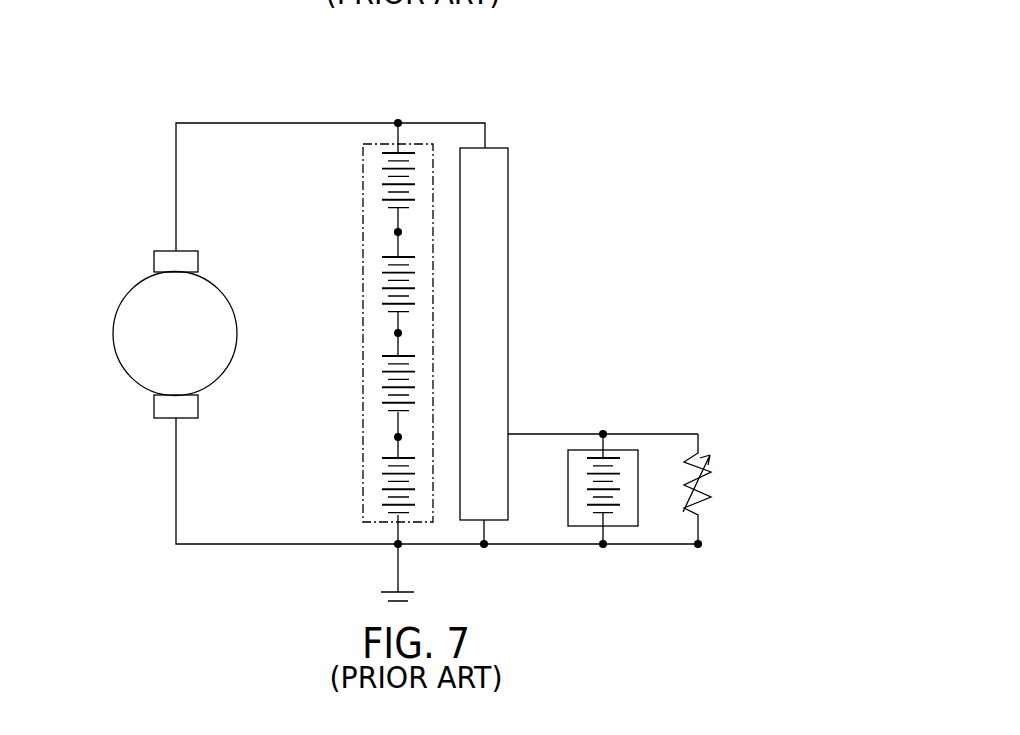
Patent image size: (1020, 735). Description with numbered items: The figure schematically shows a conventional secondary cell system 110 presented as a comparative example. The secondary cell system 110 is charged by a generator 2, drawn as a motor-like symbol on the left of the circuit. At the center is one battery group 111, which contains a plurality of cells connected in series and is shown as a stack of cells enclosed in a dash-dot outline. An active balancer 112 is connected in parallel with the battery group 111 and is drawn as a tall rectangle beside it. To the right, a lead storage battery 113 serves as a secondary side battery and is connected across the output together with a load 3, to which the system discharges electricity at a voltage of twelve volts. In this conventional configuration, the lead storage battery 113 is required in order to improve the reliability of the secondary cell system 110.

The secondary cell system 110 is at (491, 58).
The generator 2 is at (188, 343).
The battery group 111 is at (379, 522).
The active balancer 112 is at (468, 273).
The lead storage battery 113 is at (620, 526).
The load 3 is at (704, 489).